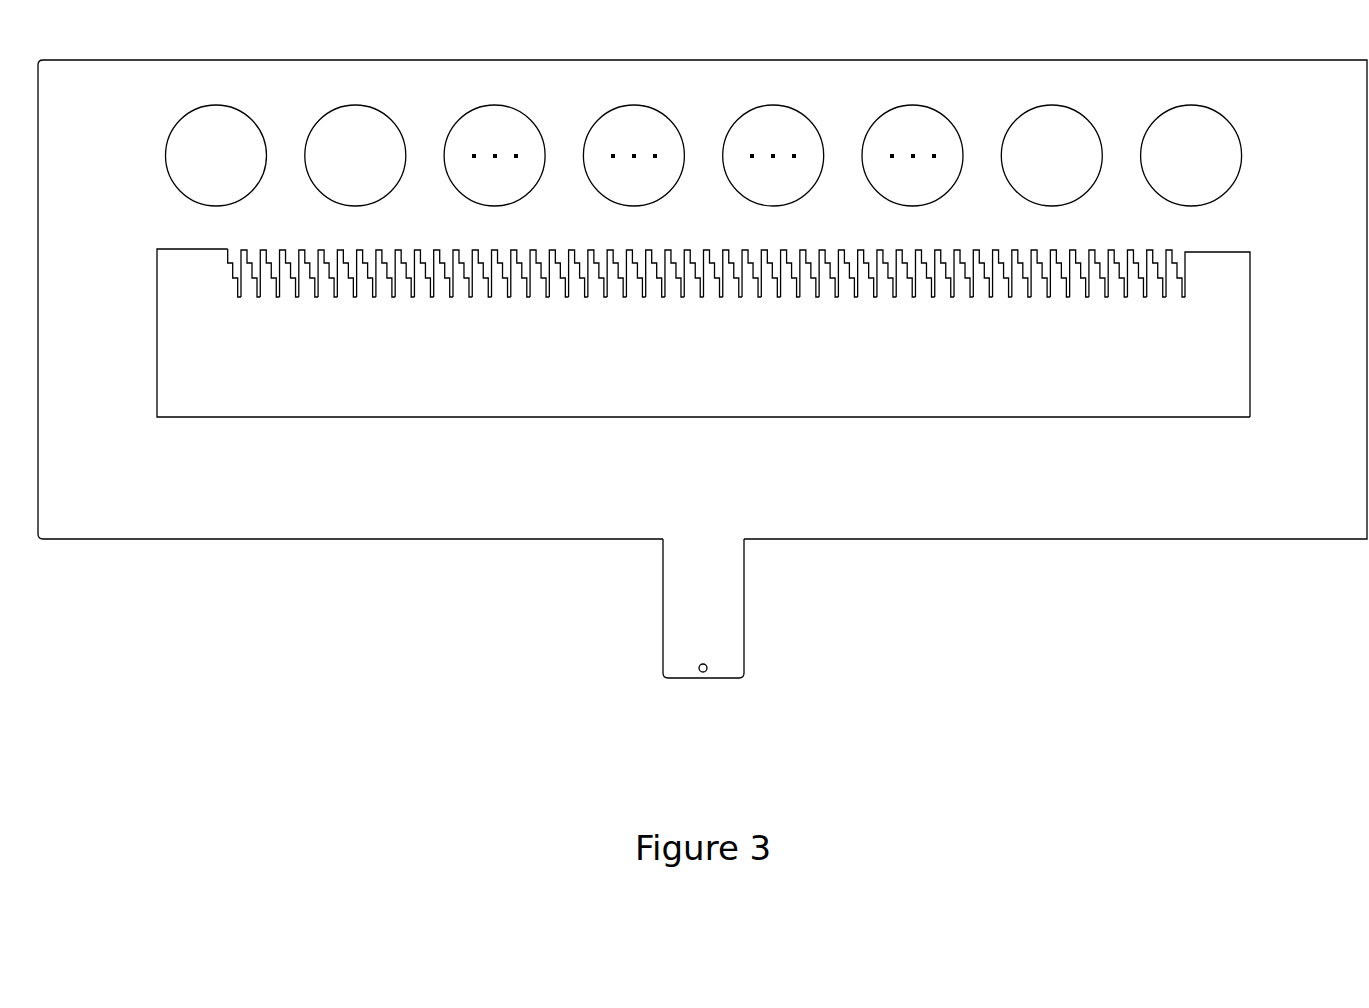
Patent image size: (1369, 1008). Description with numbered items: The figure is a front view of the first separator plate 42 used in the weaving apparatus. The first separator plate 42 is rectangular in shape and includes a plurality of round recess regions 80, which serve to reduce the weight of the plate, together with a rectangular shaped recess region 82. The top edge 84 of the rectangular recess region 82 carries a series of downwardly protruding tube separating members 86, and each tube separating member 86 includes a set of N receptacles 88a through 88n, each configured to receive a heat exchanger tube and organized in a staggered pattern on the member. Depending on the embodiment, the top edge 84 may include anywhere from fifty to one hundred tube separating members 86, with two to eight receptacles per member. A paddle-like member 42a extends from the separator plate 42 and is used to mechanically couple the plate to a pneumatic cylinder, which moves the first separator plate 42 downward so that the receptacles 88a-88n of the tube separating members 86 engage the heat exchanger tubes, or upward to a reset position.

The first separator plate 42 is at (497, 650).
The paddle-like member 42a is at (744, 615).
The round recess regions 80 is at (231, 171).
The rectangular shaped recess region 82 is at (718, 383).
The top edge 84 is at (1227, 250).
The tube separating members 86 is at (372, 298).
The receptacle 88a is at (238, 296).
The receptacle 88n is at (228, 263).